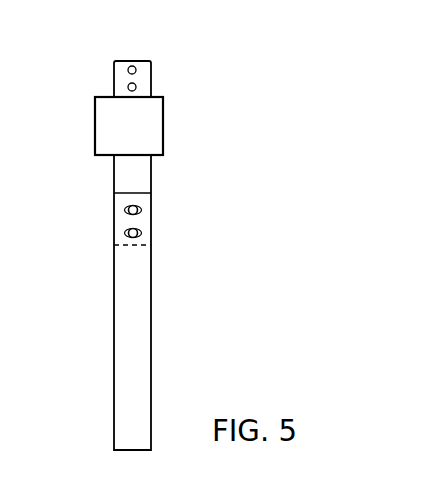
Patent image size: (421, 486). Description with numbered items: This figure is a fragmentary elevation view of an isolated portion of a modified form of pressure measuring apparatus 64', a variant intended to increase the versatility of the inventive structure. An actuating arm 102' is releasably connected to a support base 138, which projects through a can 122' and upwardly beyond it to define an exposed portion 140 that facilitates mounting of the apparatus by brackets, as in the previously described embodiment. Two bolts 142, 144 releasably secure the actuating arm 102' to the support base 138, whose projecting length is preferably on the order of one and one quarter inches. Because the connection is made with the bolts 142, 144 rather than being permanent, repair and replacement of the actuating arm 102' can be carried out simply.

The exposed portion 140 is at (117, 85).
The can 122' is at (173, 125).
The modified form of pressure measuring apparatus 64' is at (181, 200).
The support base 138 is at (122, 173).
The bolt 142 is at (141, 213).
The bolt 144 is at (136, 238).
The actuating arm 102' is at (91, 302).